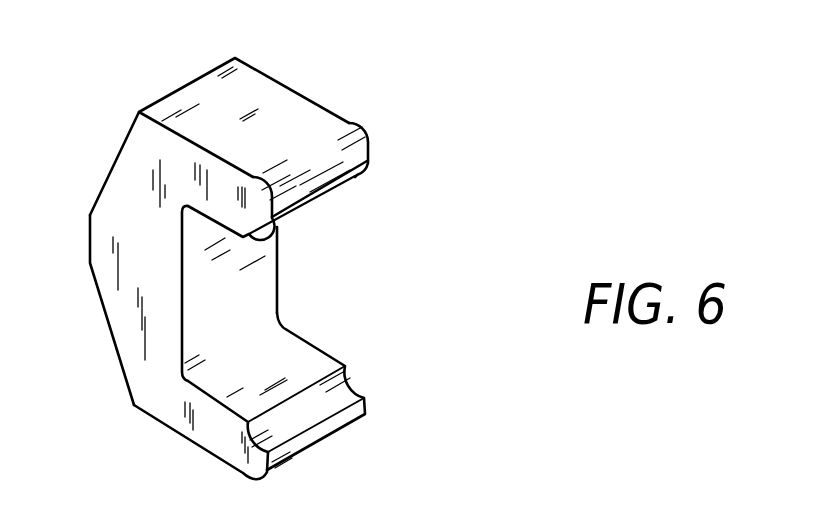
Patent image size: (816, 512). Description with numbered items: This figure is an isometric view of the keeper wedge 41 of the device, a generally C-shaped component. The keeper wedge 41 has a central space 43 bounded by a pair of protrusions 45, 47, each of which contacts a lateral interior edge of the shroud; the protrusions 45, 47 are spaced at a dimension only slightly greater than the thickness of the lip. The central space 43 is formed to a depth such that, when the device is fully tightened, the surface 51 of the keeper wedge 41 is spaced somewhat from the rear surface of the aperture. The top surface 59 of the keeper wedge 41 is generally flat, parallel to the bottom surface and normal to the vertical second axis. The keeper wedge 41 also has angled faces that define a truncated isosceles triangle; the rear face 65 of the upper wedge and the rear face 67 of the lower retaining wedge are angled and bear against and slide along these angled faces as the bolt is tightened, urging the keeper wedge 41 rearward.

The central space 43 is at (332, 252).
The keeper wedge 41 is at (132, 335).
The protrusion 45 is at (307, 140).
The protrusion 47 is at (312, 370).
The surface 51 is at (247, 283).
The top surface 59 is at (263, 103).
The rear face 65 is at (120, 157).
The rear face 67 is at (98, 293).